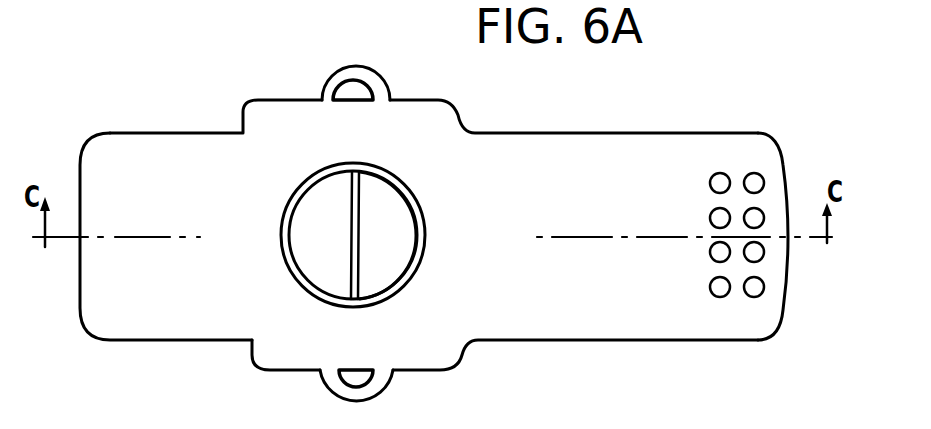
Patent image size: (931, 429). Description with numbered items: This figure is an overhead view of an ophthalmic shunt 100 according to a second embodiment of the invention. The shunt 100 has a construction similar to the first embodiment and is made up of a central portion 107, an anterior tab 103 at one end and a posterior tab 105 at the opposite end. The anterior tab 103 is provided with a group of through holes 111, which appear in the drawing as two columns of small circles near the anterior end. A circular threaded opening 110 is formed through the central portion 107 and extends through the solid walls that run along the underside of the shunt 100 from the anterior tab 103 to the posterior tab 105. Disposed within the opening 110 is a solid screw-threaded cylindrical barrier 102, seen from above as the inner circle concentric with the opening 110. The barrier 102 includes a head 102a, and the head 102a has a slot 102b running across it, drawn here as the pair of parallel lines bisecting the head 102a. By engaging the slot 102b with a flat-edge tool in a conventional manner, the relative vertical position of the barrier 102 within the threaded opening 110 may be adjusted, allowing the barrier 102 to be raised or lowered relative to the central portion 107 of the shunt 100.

The shunt 100 is at (567, 126).
The solid screw-threaded cylindrical barrier 102 is at (386, 222).
The head 102a is at (410, 225).
The slot 102b is at (362, 258).
The anterior tab 103 is at (753, 158).
The posterior tab 105 is at (95, 336).
The central portion 107 is at (442, 320).
The circular threaded opening 110 is at (298, 187).
The through holes 111 is at (754, 218).